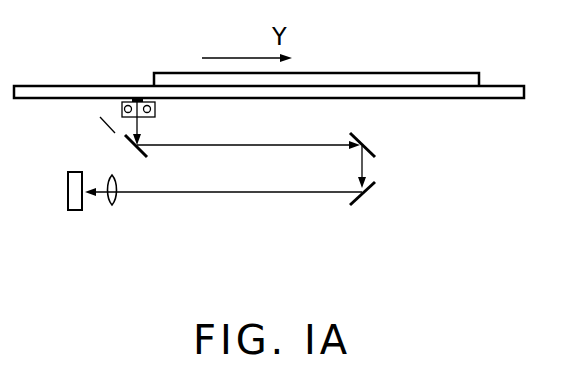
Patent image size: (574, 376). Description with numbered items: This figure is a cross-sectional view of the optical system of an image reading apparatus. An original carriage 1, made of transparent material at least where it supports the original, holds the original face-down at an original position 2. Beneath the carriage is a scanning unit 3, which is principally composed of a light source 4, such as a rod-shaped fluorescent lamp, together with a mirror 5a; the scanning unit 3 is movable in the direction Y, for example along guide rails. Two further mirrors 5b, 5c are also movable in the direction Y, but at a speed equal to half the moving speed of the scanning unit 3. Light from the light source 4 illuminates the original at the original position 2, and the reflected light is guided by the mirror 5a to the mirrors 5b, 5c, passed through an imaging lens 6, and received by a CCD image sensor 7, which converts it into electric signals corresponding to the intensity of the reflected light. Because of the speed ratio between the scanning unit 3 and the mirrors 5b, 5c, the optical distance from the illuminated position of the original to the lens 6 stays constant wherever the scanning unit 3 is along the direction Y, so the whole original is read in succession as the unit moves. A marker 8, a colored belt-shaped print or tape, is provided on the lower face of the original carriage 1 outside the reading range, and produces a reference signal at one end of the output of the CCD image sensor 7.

The original carriage 1 is at (508, 86).
The original position 2 is at (452, 73).
The scanning unit 3 is at (117, 138).
The light source 4 is at (122, 108).
The mirror 5a is at (147, 152).
The mirror 5b is at (378, 148).
The mirror 5c is at (358, 198).
The imaging lens 6 is at (117, 198).
The CCD image sensor 7 is at (73, 210).
The marker 8 is at (137, 87).